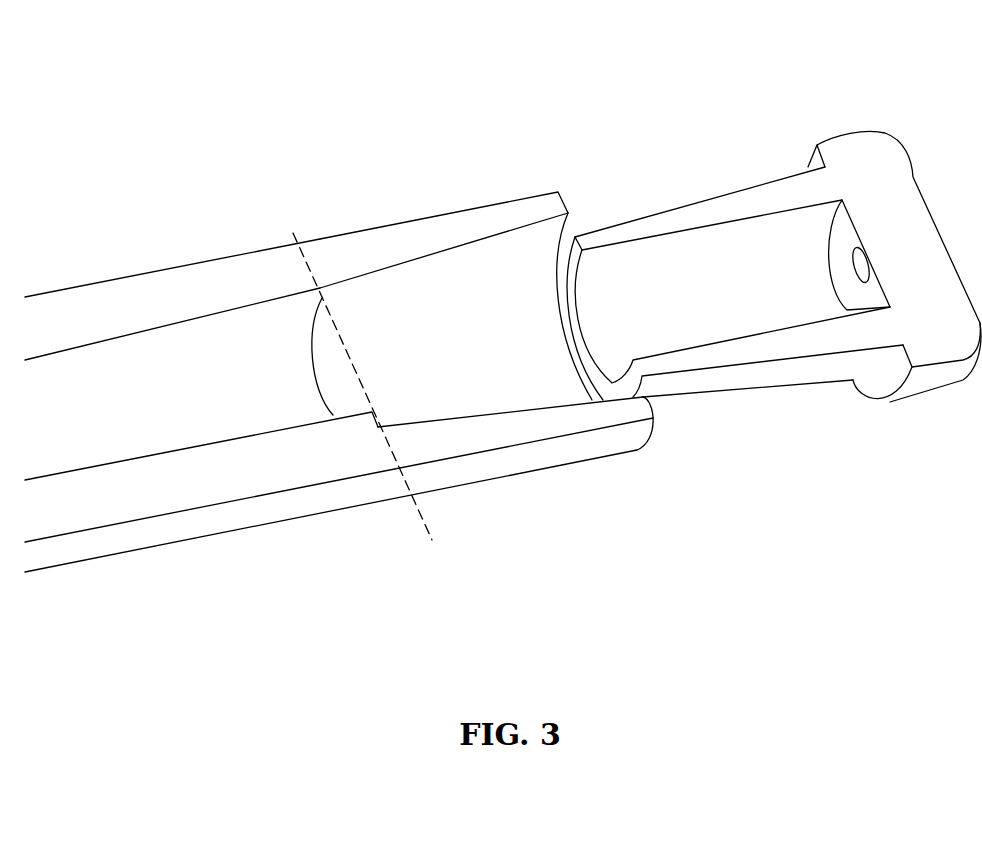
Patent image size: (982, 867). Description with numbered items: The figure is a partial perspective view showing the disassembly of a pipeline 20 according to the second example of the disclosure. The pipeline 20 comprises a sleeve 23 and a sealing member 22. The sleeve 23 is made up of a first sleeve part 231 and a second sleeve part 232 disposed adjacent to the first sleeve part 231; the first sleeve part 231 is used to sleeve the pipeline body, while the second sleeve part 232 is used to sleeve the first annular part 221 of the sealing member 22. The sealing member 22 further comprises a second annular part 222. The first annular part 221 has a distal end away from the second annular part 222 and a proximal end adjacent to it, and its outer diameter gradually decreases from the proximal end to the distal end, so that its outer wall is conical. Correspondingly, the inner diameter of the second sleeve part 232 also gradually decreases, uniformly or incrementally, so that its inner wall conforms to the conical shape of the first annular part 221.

The pipeline 20 is at (965, 440).
The sealing member 22 is at (668, 67).
The first annular part 221 is at (765, 197).
The second annular part 222 is at (880, 170).
The sleeve 23 is at (313, 172).
The first sleeve part 231 is at (248, 283).
The second sleeve part 232 is at (392, 238).